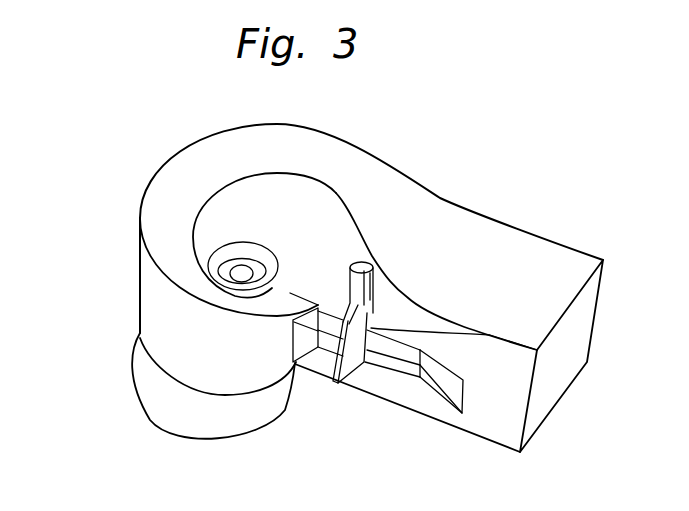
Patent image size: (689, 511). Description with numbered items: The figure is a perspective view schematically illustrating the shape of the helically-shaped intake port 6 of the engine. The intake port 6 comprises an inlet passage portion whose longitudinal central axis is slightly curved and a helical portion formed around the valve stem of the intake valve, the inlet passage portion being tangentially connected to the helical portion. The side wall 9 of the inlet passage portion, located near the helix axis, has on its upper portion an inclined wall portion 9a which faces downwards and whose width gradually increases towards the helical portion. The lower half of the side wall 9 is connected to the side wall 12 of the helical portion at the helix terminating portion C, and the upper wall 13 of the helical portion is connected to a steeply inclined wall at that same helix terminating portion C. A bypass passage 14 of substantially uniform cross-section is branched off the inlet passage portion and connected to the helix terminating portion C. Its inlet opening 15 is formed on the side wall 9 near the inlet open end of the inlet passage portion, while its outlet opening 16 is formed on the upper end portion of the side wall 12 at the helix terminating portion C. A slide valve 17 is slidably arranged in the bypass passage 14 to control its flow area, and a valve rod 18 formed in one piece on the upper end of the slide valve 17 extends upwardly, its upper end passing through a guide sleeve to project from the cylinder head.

The helically-shaped intake port 6 is at (508, 212).
The side wall 9 is at (490, 420).
The inclined wall portion 9a is at (400, 303).
The side wall of the helical portion 12 is at (160, 325).
The upper wall of the helical portion 13 is at (193, 280).
The bypass passage 14 is at (368, 377).
The inlet opening 15 is at (437, 380).
The outlet opening 16 is at (300, 333).
The slide valve 17 is at (353, 365).
The valve rod 18 is at (371, 296).
The helix terminating portion C is at (293, 302).